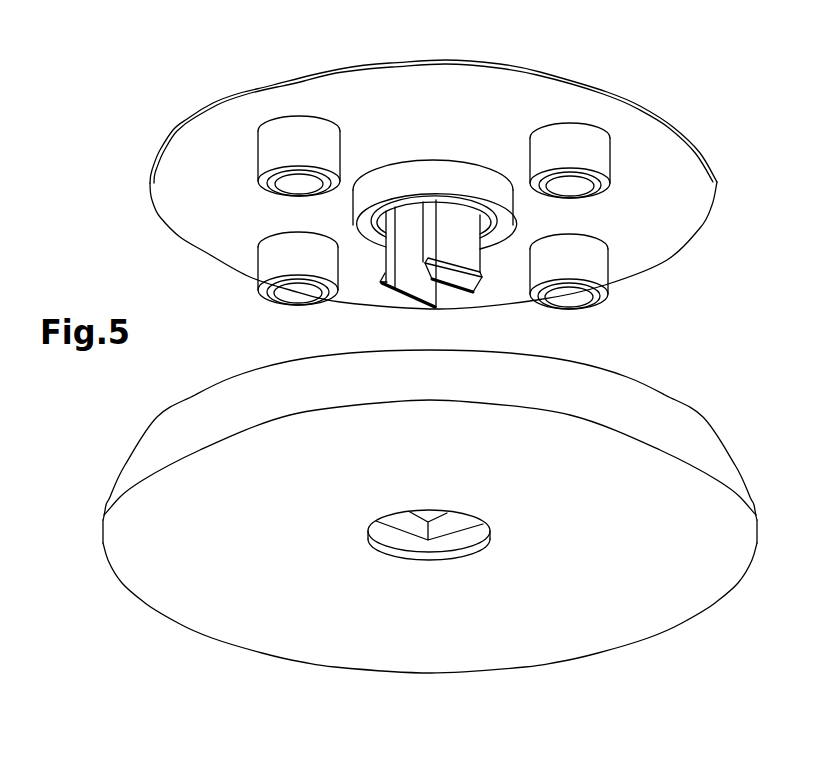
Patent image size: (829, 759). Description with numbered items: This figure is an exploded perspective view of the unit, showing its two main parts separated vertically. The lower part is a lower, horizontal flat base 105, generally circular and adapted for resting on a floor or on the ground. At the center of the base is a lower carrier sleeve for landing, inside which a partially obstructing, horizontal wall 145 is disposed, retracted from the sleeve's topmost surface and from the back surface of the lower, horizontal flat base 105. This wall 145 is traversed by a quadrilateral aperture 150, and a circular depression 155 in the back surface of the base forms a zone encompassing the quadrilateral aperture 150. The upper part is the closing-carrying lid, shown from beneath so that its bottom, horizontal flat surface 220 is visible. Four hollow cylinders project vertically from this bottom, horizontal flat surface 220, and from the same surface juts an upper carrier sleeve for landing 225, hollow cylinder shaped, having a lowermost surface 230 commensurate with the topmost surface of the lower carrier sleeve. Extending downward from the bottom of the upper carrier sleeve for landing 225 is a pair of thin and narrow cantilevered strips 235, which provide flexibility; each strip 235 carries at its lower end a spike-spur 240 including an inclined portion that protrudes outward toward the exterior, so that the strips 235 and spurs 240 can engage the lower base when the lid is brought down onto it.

The lower, horizontal flat base 105 is at (430, 511).
The partially obstructing, horizontal wall 145 is at (512, 602).
The quadrilateral aperture 150 is at (473, 619).
The circular depression 155 is at (335, 631).
The bottom, horizontal flat surface 220 is at (433, 159).
The upper carrier sleeve for landing 225 is at (399, 138).
The lowermost surface 230 is at (342, 149).
The thin and narrow cantilevered strips 235 is at (368, 277).
The spike-spur 240 is at (532, 308).